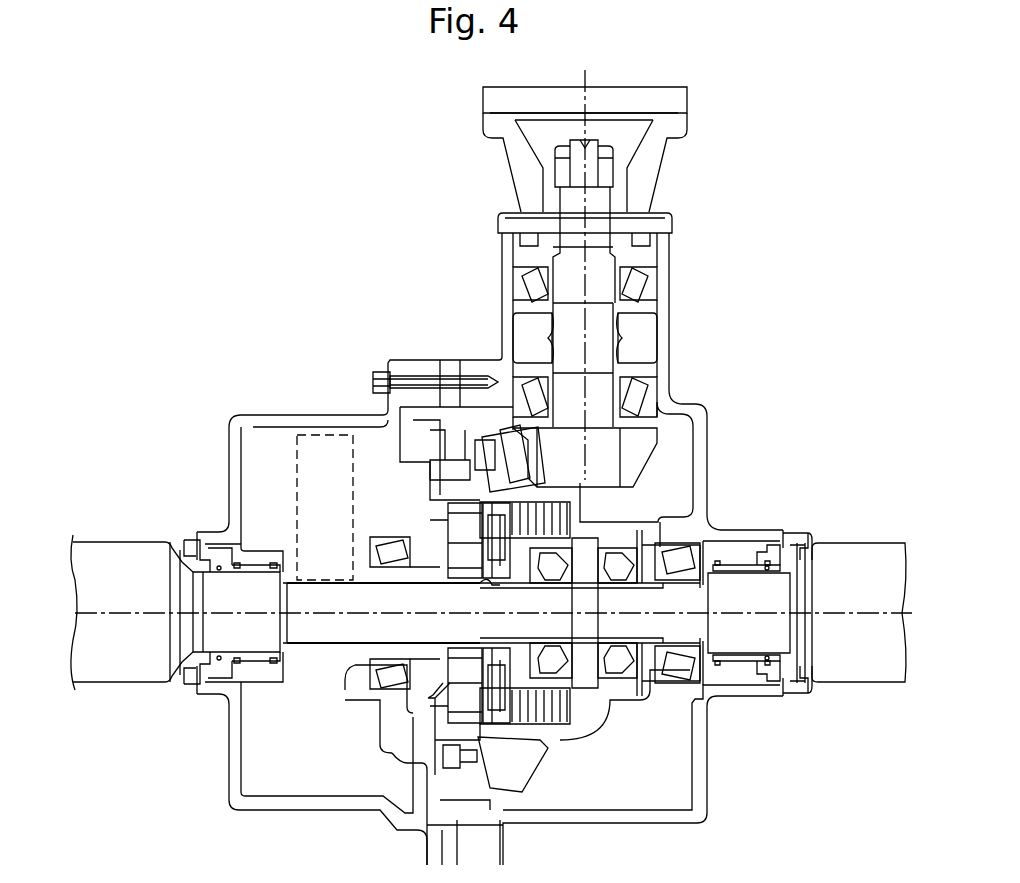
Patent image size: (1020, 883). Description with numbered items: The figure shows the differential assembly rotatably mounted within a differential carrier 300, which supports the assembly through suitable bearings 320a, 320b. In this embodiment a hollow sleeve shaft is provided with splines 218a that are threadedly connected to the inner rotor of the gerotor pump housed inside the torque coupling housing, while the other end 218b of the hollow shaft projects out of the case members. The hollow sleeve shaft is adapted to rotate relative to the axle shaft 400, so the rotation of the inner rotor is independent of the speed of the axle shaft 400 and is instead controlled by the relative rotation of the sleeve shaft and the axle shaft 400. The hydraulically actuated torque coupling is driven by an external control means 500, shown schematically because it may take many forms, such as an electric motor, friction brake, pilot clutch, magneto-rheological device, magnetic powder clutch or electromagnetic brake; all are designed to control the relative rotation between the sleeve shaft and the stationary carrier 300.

The differential carrier 300 is at (323, 418).
The external control means 500 is at (325, 507).
The axle shaft 400 is at (491, 613).
The splines 218a is at (487, 588).
The other end of the hollow shaft 218b is at (298, 589).
The bearing 320a is at (355, 665).
The bearing 320b is at (687, 538).